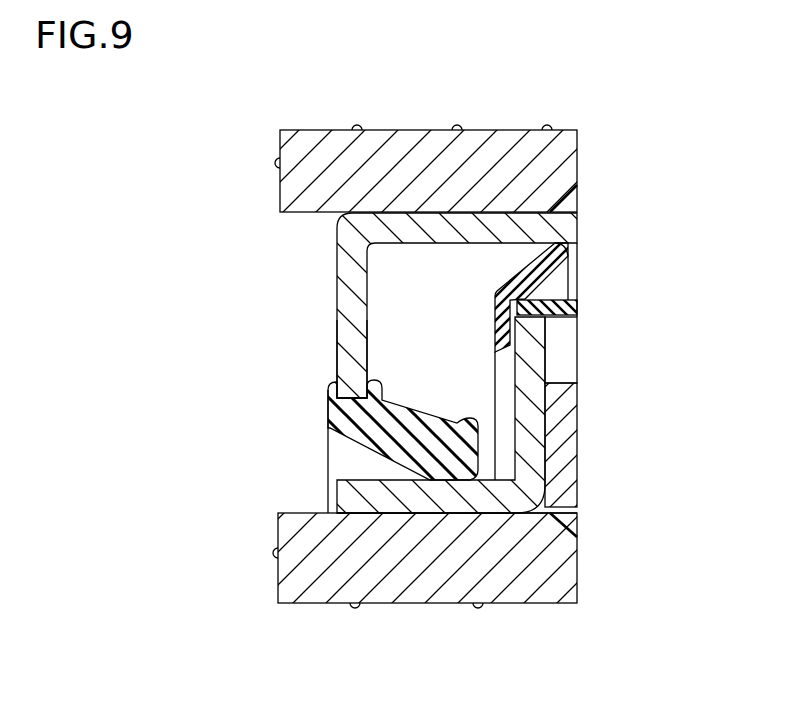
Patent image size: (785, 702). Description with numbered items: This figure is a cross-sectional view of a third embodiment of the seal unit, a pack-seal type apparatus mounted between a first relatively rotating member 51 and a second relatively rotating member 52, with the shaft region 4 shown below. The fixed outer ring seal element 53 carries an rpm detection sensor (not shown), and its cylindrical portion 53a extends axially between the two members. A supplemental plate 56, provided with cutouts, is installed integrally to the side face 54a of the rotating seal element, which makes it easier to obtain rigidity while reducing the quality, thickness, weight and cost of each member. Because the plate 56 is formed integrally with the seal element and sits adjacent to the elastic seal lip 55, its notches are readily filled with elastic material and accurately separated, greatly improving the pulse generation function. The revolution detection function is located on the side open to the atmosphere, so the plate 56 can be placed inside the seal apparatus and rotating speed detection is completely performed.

The shaft 4 is at (497, 508).
The first relatively rotating member 51 is at (567, 173).
The second relatively rotating member 52 is at (578, 558).
The fixed outer ring seal element 53 is at (338, 272).
The cylindrical portion of seal case 53a is at (337, 338).
The side face of the seal element 54a is at (542, 464).
The seal lip 55 is at (565, 266).
The supplemental plate 56 is at (570, 343).